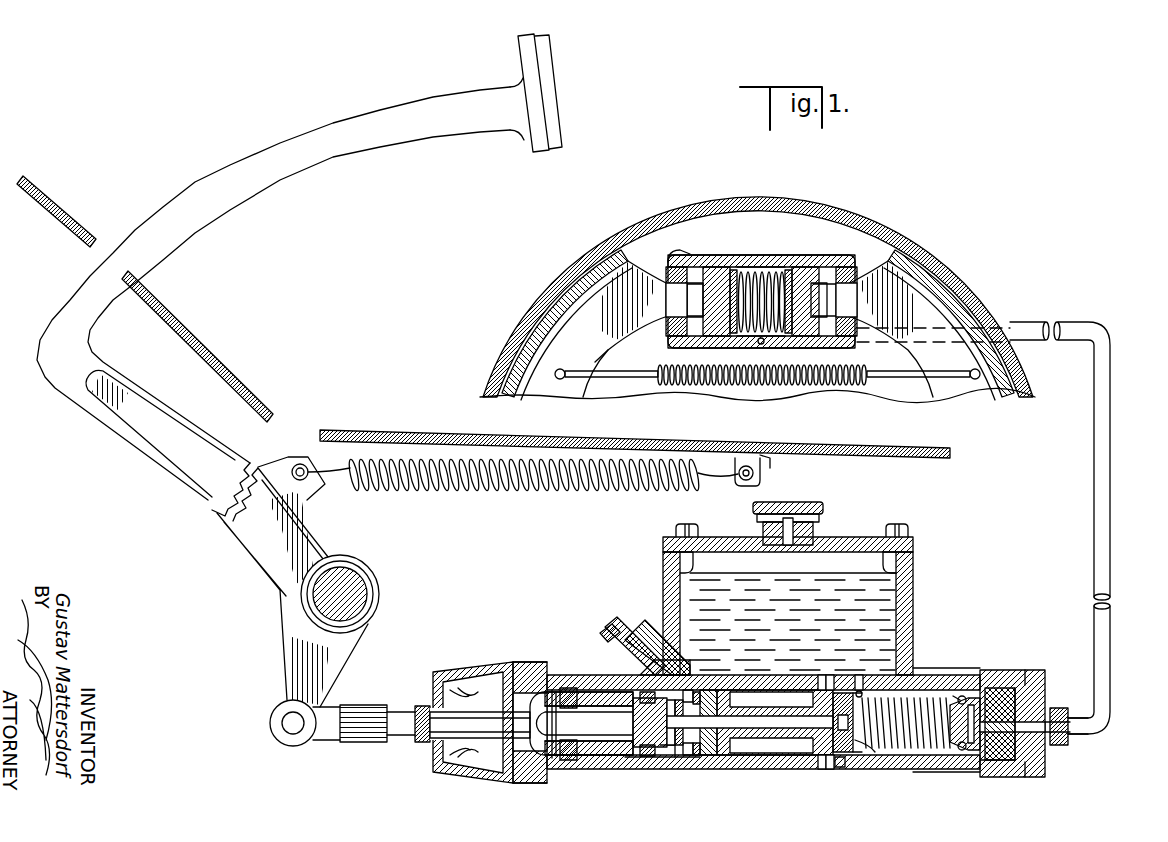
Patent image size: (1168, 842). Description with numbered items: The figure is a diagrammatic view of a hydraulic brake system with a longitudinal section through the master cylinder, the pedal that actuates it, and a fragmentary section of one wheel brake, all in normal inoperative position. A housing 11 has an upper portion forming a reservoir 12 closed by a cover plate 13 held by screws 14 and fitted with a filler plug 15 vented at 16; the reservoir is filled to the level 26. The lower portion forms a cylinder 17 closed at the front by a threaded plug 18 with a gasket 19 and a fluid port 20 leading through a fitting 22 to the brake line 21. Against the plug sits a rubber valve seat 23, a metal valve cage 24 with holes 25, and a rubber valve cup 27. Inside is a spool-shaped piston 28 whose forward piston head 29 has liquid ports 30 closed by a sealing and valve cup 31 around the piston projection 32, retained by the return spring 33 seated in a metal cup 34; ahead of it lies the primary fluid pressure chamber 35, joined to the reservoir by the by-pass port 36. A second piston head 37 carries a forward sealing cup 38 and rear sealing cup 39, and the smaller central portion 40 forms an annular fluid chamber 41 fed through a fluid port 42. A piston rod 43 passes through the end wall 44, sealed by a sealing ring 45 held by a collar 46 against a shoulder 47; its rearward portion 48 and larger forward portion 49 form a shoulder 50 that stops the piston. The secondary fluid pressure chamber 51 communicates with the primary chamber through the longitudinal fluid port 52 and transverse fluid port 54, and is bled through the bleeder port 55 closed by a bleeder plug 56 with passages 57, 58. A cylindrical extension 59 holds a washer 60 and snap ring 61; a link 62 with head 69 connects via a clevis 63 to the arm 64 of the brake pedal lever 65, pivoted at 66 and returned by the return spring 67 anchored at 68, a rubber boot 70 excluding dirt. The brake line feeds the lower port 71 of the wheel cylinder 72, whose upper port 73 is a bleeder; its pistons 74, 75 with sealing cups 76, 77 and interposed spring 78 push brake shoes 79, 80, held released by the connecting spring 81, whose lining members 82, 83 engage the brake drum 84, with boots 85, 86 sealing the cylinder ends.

The housing 11 is at (905, 603).
The reservoir 12 is at (903, 587).
The cover plate 13 is at (819, 536).
The screws 14 is at (676, 528).
The filler plug 15 is at (795, 503).
The vent 16 is at (763, 516).
The cylinder 17 is at (918, 690).
The threaded plug 18 is at (1040, 676).
The gasket 19 is at (1025, 685).
The fluid port 20 is at (1000, 690).
The brake line 21 is at (1110, 622).
The fitting 22 is at (1062, 710).
The rubber valve seat 23 is at (1000, 762).
The metal valve cage 24 is at (955, 745).
The holes 25 is at (962, 696).
The fluid level 26 is at (760, 574).
The rubber valve cup 27 is at (970, 745).
The piston 28 is at (772, 735).
The forward piston head 29 is at (828, 770).
The liquid ports 30 is at (820, 690).
The sealing and valve cup 31 is at (840, 760).
The piston projection 32 is at (878, 752).
The return spring 33 is at (866, 690).
The metal cup 34 is at (850, 752).
The primary fluid pressure chamber 35 is at (944, 690).
The compensating or by-pass port 36 is at (858, 690).
The second piston head 37 is at (712, 692).
The forward sealing cup 38 is at (720, 757).
The rear sealing cup 39 is at (690, 757).
The central portion 40 is at (766, 707).
The annular fluid chamber 41 is at (785, 680).
The fluid port 42 is at (822, 676).
The piston rod 43 is at (575, 712).
The end wall 44 is at (630, 700).
The sealing ring 45 is at (640, 748).
The collar 46 is at (665, 760).
The shoulder 47 is at (645, 760).
The rearward rod portion 48 is at (640, 716).
The forward rod portion 49 is at (698, 692).
The shoulder 50 is at (672, 757).
The secondary fluid pressure chamber 51 is at (683, 757).
The longitudinal fluid port 52 is at (782, 730).
The transverse fluid port 54 is at (680, 720).
The bleeder port 55 is at (670, 675).
The bleeder plug 56 is at (628, 628).
The fluid passage 57 is at (660, 640).
The fluid passage 58 is at (604, 628).
The cylindrical extension 59 is at (554, 676).
The washer 60 is at (560, 697).
The snap ring 61 is at (556, 752).
The link 62 is at (448, 725).
The clevis 63 is at (338, 742).
The arm 64 is at (300, 655).
The brake pedal lever 65 is at (227, 516).
The pivot 66 is at (364, 586).
The return spring 67 is at (470, 492).
The spring attachment 68 is at (760, 477).
The head 69 is at (552, 740).
The rubber boot 70 is at (452, 670).
The lower port 71 is at (760, 345).
The wheel cylinder 72 is at (800, 266).
The upper port 73 is at (770, 270).
The piston 74 is at (703, 300).
The piston 75 is at (819, 300).
The sealing cup 76 is at (733, 270).
The sealing cup 77 is at (785, 345).
The spring 78 is at (788, 270).
The brake shoe 79 is at (605, 345).
The brake shoe 80 is at (975, 380).
The connecting spring 81 is at (725, 385).
The lining member 82 is at (575, 282).
The lining member 83 is at (960, 282).
The brake drum 84 is at (905, 228).
The boot 85 is at (678, 256).
The boot 86 is at (845, 256).